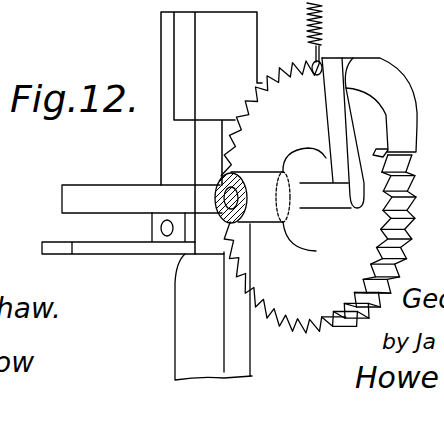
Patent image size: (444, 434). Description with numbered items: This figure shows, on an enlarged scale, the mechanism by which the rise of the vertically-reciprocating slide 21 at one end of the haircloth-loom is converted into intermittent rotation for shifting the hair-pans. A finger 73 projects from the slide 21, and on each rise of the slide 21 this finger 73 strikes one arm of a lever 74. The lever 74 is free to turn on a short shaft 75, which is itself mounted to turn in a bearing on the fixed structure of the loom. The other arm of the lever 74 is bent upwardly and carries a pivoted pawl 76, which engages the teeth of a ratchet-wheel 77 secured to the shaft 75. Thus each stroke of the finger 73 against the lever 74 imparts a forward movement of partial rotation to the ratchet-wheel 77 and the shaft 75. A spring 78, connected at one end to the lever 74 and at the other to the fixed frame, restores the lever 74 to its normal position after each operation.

The slide 21 is at (213, 302).
The finger 73 is at (127, 245).
The lever 74 is at (142, 199).
The short shaft 75 is at (250, 206).
The pivoted pawl 76 is at (416, 126).
The ratchet-wheel 77 is at (410, 203).
The spring 78 is at (326, 29).